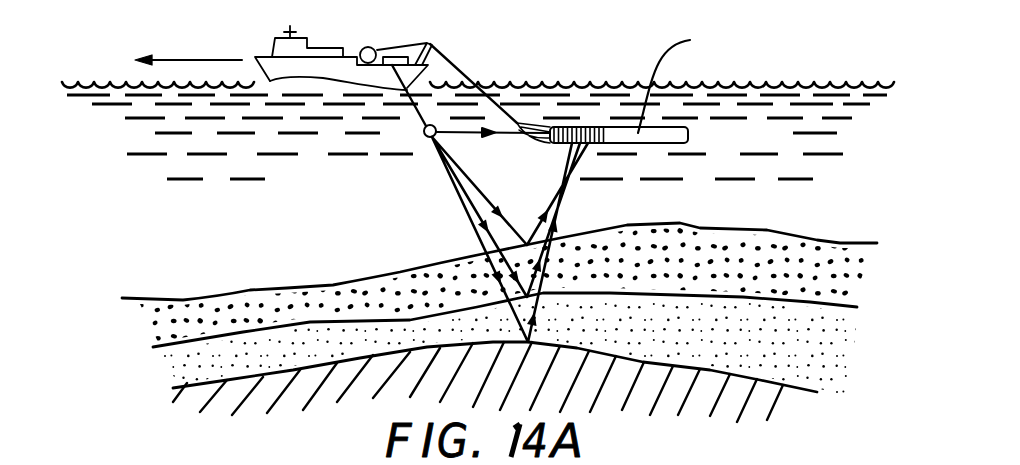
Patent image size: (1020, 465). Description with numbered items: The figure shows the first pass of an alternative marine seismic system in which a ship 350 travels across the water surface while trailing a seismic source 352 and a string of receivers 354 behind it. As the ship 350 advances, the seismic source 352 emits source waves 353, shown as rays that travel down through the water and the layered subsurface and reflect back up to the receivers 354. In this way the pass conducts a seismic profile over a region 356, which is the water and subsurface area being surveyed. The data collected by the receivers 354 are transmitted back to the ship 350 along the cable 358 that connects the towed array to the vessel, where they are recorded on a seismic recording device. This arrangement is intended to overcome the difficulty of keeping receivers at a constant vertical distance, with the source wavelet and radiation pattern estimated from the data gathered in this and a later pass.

The ship 350 is at (323, 48).
The seismic source 352 is at (425, 131).
The source waves 353 is at (468, 162).
The receivers 354 is at (677, 131).
The region 356 is at (762, 213).
The cable 358 is at (461, 69).